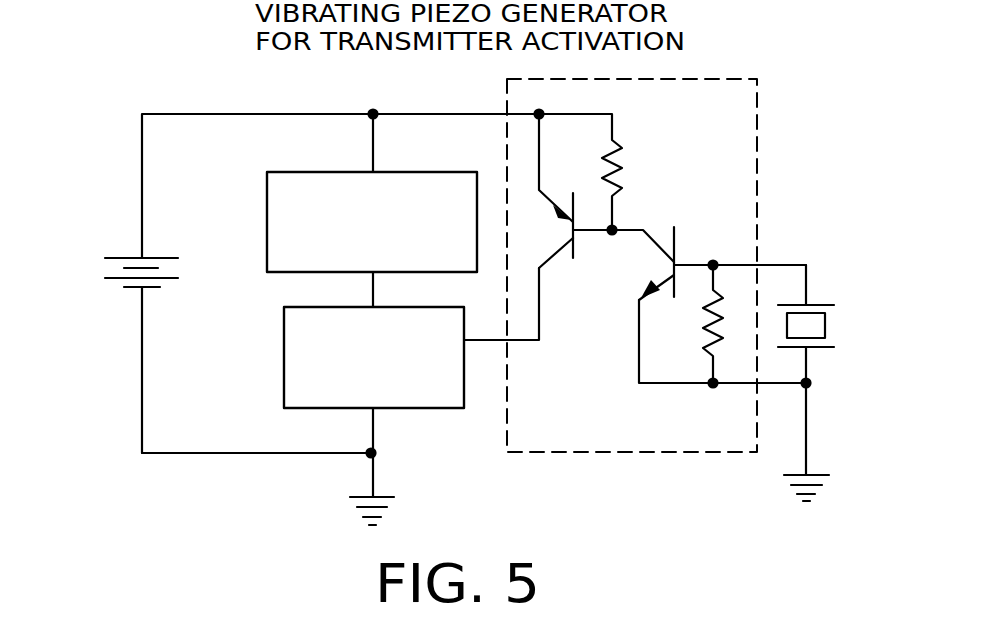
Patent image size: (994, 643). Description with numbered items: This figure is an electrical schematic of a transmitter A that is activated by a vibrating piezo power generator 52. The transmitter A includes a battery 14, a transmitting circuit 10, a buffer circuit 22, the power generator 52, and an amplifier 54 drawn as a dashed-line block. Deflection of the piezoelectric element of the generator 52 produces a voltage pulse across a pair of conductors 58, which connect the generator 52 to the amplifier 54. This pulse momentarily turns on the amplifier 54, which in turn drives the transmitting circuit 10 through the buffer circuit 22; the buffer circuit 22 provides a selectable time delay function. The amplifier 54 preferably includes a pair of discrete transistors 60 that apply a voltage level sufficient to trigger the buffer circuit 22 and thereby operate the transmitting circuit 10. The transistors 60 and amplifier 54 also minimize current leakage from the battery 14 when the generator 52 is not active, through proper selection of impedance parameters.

The transmitting circuit 10 is at (285, 230).
The battery 14 is at (112, 283).
The buffer circuit 22 is at (296, 343).
The vibrating piezo power generator 52 is at (838, 310).
The amplifier circuit 54 is at (760, 128).
The pair of conductors 58 is at (783, 265).
The pair of discrete transistors 60 is at (648, 258).
The transmitter A is at (233, 457).